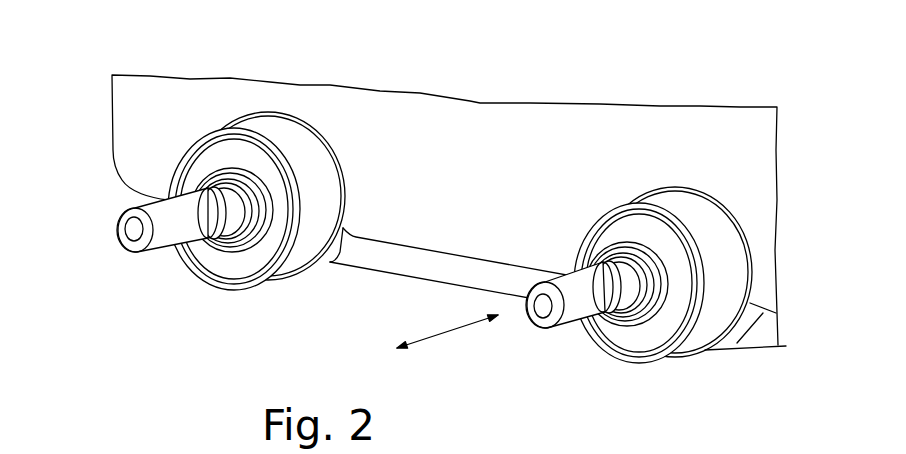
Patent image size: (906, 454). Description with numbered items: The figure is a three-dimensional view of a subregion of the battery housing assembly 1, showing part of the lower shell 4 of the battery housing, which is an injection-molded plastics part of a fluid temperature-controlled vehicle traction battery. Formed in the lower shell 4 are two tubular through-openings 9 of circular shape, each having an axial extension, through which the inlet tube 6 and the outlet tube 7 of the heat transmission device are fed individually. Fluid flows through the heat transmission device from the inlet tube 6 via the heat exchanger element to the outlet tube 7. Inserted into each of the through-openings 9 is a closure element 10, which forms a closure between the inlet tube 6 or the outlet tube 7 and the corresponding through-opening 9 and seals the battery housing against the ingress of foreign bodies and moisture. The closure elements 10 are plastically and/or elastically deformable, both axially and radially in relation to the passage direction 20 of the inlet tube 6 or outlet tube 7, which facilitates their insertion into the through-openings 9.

The battery housing assembly 1 is at (422, 236).
The lower shell 4 is at (126, 142).
The inlet tube 6 is at (158, 262).
The outlet tube 7 is at (580, 318).
The through-openings 9 is at (273, 256).
The closure elements 10 is at (243, 261).
The passage direction 20 is at (452, 332).